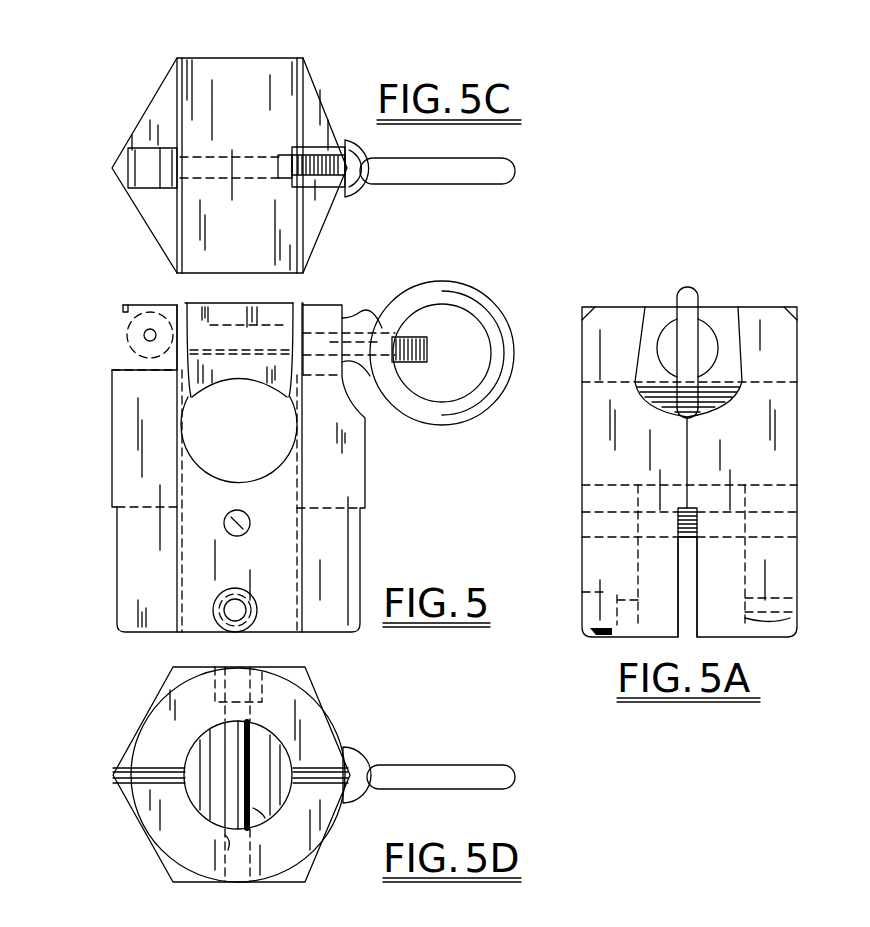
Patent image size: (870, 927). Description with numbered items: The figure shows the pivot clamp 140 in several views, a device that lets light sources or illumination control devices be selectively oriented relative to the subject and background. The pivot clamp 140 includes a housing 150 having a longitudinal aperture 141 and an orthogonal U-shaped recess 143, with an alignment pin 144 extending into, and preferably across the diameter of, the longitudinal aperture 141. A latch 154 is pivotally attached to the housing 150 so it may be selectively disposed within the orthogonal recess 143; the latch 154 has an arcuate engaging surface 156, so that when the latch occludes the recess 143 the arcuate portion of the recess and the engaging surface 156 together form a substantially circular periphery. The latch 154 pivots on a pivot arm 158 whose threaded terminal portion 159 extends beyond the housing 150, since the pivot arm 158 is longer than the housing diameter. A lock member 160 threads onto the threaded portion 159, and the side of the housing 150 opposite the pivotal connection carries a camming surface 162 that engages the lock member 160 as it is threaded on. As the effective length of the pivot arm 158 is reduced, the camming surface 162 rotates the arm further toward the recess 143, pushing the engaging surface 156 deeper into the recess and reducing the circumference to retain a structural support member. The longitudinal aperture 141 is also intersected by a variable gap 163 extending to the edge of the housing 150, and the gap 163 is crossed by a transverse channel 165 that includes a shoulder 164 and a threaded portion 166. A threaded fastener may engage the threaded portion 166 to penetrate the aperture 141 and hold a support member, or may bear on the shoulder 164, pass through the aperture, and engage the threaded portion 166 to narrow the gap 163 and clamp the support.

In FIG. 5C, the pivot clamp 140 is at (135, 101).
In FIG. 5, the pivot clamp 140 is at (96, 322).
In FIG. 5A, the pivot clamp 140 is at (858, 282).
In FIG. 5D, the pivot clamp 140 is at (150, 845).
In FIG. 5, the longitudinal aperture 141 is at (292, 588).
In FIG. 5D, the longitudinal aperture 141 is at (268, 758).
In FIG. 5, the orthogonal U-shaped recess 143 is at (187, 437).
In FIG. 5, the alignment pin 144 is at (248, 523).
In FIG. 5A, the alignment pin 144 is at (697, 530).
In FIG. 5D, the alignment pin 144 is at (265, 818).
In FIG. 5C, the housing 150 is at (310, 102).
In FIG. 5, the housing 150 is at (123, 470).
In FIG. 5A, the housing 150 is at (783, 442).
In FIG. 5D, the housing 150 is at (160, 715).
In FIG. 5C, the latch 154 is at (262, 96).
In FIG. 5, the latch 154 is at (290, 305).
In FIG. 5, the arcuate engaging surface 156 is at (215, 392).
In FIG. 5C, the pivot arm 158 is at (135, 166).
In FIG. 5, the pivot arm 158 is at (235, 345).
In FIG. 5, the threaded terminal portion 159 is at (413, 342).
In FIG. 5C, the lock member 160 is at (515, 172).
In FIG. 5, the lock member 160 is at (483, 300).
In FIG. 5D, the lock member 160 is at (516, 777).
In FIG. 5, the camming surface 162 is at (442, 369).
In FIG. 5A, the camming surface 162 is at (722, 335).
In FIG. 5, the variable gap 163 is at (365, 383).
In FIG. 5A, the variable gap 163 is at (690, 577).
In FIG. 5D, the variable gap 163 is at (120, 781).
In FIG. 5A, the shoulder 164 is at (604, 638).
In FIG. 5, the transverse channel 165 is at (232, 618).
In FIG. 5A, the transverse channel 165 is at (753, 610).
In FIG. 5D, the transverse channel 165 is at (255, 703).
In FIG. 5A, the threaded portion 166 is at (792, 607).
In FIG. 5D, the threaded portion 166 is at (225, 847).